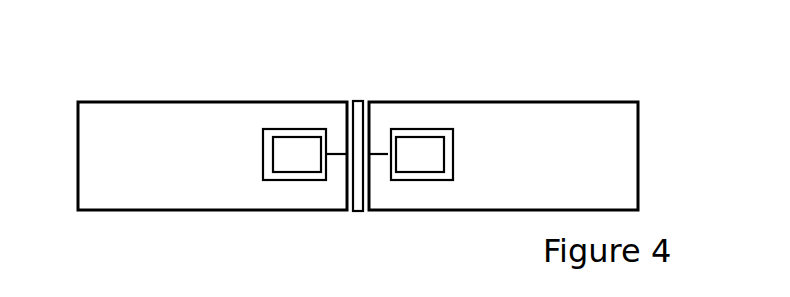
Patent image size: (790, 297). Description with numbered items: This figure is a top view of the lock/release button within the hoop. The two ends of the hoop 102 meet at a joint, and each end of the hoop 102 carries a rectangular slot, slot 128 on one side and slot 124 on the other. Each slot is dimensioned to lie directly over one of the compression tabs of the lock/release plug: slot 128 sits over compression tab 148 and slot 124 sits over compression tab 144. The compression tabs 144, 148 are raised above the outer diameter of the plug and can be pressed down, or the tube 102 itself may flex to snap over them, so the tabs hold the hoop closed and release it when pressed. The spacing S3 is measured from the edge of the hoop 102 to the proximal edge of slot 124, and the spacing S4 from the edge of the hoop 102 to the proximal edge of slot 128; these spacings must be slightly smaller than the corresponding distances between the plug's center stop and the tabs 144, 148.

The tube 102 is at (603, 133).
The slot 128 is at (310, 133).
The compression tab 148 is at (283, 167).
The spacing S4 is at (338, 155).
The spacing S3 is at (378, 150).
The compression tab 144 is at (433, 150).
The slot 124 is at (425, 177).